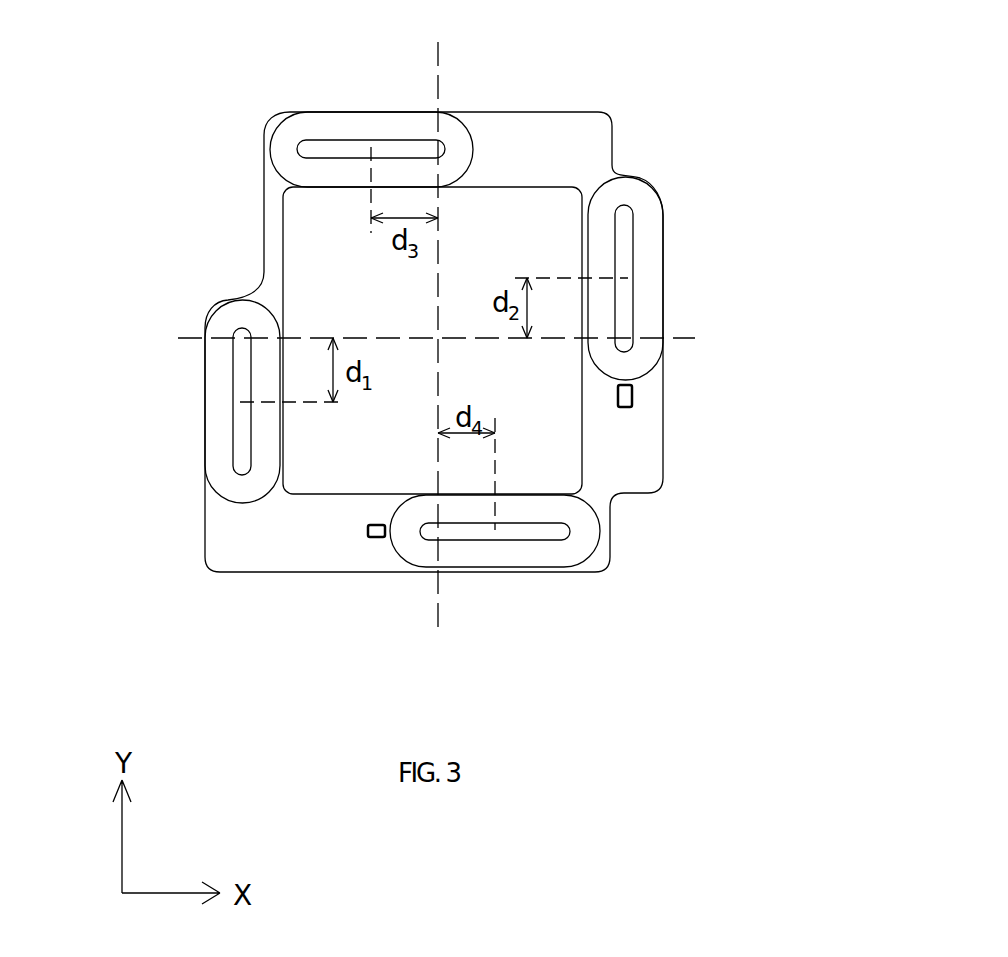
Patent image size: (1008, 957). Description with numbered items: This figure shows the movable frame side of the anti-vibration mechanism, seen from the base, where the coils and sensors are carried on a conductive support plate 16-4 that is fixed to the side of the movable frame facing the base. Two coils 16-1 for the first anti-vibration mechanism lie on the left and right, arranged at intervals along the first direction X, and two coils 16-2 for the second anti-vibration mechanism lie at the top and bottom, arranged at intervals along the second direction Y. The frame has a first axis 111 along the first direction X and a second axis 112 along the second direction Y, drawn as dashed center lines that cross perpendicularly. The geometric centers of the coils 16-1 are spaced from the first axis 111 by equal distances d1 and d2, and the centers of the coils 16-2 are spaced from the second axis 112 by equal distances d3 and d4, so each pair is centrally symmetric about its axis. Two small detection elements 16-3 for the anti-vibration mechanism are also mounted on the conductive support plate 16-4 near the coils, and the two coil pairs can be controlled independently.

The coil for the first anti-vibration mechanism 16-1 is at (655, 243).
The coil for the second anti-vibration mechanism 16-2 is at (345, 125).
The detection element for the anti-vibration mechanism 16-3 is at (370, 538).
The conductive support plate 16-4 is at (572, 137).
The first axis 111 is at (188, 334).
The second axis 112 is at (437, 43).